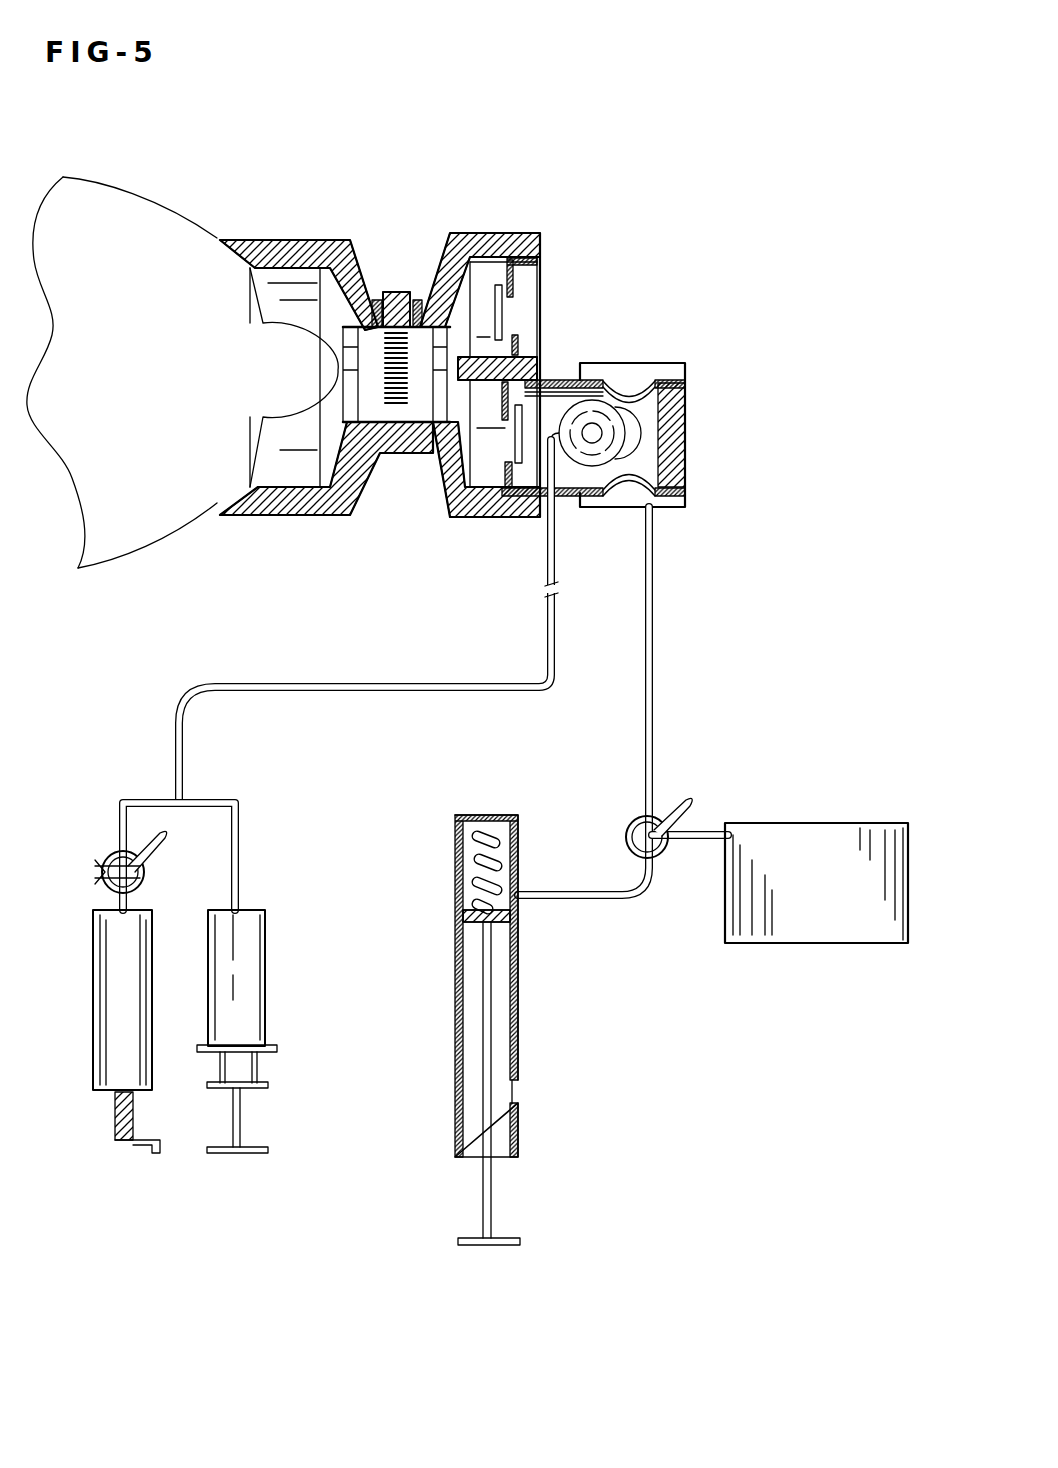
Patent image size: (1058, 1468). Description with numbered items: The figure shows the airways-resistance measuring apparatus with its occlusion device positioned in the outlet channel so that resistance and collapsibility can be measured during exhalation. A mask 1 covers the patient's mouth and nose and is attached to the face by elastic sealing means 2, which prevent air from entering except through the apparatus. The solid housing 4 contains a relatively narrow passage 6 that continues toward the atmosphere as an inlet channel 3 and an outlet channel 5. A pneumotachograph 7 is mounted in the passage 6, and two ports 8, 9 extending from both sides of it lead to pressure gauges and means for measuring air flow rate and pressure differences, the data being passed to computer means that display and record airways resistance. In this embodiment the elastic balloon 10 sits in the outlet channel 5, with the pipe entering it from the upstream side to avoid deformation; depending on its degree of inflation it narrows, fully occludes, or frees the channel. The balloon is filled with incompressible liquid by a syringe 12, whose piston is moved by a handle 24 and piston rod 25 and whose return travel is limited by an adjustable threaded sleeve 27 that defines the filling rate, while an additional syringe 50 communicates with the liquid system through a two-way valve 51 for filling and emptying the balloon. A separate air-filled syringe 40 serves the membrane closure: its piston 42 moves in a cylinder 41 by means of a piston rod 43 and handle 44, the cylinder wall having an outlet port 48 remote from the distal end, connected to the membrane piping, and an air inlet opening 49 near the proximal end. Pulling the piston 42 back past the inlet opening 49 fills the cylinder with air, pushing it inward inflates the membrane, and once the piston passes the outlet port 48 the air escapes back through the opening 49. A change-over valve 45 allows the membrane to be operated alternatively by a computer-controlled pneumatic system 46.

The mask 1 is at (297, 238).
The elastic sealing means 2 is at (266, 515).
The inlet channel 3 is at (457, 262).
The housing 4 is at (350, 455).
The outlet channel 5 is at (487, 462).
The passage 6 is at (401, 407).
The pneumotachograph 7 is at (382, 440).
The port 8 is at (388, 292).
The port 9 is at (418, 300).
The elastic balloon 10 is at (540, 235).
The syringe 12 is at (278, 937).
The handle 24 is at (270, 1149).
The piston rod 25 is at (243, 1110).
The sleeve 27 is at (262, 1068).
The syringe 40 is at (458, 815).
The cylinder 41 is at (472, 1245).
The piston 42 is at (462, 920).
The piston rod 43 is at (495, 1213).
The handle 44 is at (460, 1037).
The change-over valve 45 is at (630, 832).
The computer-controlled pneumatic system 46 is at (737, 945).
The outlet port 48 is at (519, 897).
The air inlet opening 49 is at (522, 1090).
The syringe 50 is at (93, 1090).
The two-way valve 51 is at (110, 862).